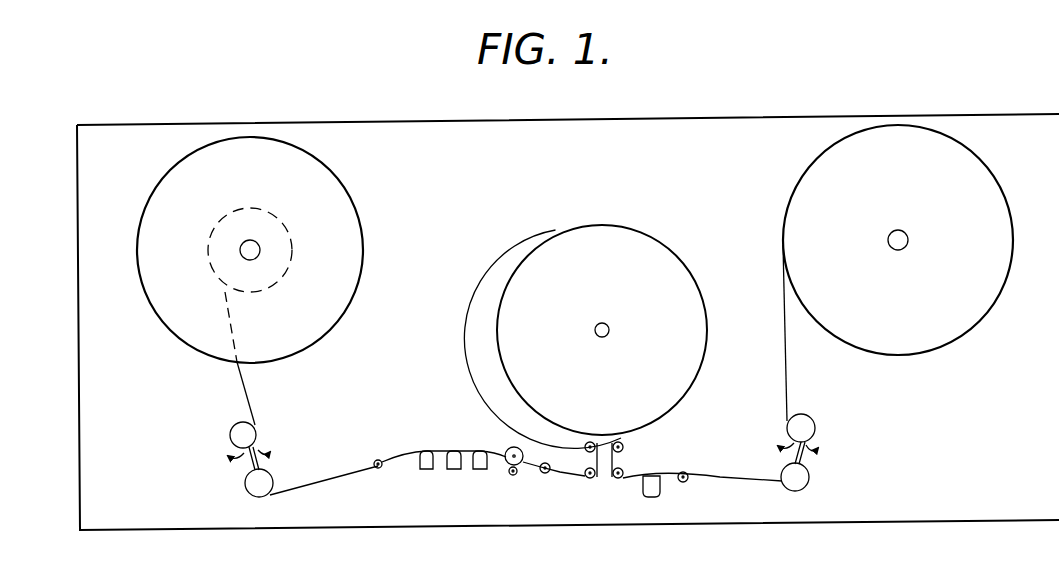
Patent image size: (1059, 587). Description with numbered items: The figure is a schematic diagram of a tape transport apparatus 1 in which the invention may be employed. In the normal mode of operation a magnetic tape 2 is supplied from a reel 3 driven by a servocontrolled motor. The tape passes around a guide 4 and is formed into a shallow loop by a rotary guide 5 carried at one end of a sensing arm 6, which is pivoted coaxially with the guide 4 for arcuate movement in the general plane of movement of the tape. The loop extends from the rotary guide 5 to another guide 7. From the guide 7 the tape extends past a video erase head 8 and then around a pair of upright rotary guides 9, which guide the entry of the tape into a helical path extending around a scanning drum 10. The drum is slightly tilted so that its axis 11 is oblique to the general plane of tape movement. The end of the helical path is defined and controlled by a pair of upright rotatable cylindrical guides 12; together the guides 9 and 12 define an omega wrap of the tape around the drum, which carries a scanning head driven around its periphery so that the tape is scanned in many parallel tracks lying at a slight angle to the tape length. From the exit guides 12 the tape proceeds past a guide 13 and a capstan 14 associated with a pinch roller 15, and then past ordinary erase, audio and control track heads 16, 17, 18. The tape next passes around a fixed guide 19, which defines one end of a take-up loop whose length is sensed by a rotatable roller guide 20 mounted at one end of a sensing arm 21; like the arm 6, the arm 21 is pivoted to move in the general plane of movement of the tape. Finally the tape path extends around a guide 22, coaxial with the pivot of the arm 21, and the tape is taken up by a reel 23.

The apparatus 1 is at (677, 106).
The magnetic tape 2 is at (750, 483).
The reel 3 is at (815, 172).
The guide 4 is at (792, 418).
The rotary guide 5 is at (809, 482).
The sensing arm 6 is at (810, 443).
The guide 7 is at (685, 482).
The video erase head 8 is at (655, 497).
The pair of upright rotary guides 9 is at (624, 455).
The scanning drum 10 is at (590, 237).
The axis 11 is at (595, 330).
The pair of upright rotatable cylindrical guides 12 is at (586, 462).
The guide 13 is at (545, 473).
The capstan 14 is at (513, 475).
The pinch roller 15 is at (514, 447).
The erase, audio and control track heads 16 is at (480, 469).
The magnetic head 17 is at (454, 469).
The erase, audio and control track heads 18 is at (426, 469).
The fixed guide 19 is at (378, 468).
The rotatable roller guide 20 is at (273, 476).
The sensing arm 21 is at (240, 454).
The guide 22 is at (238, 428).
The reel 23 is at (333, 192).